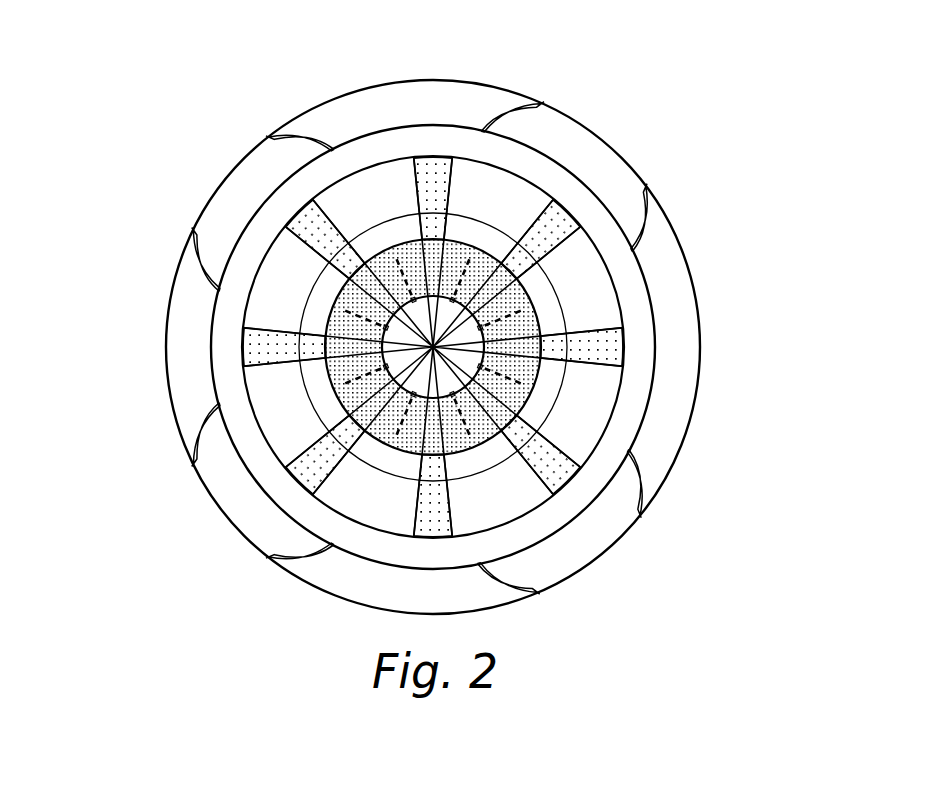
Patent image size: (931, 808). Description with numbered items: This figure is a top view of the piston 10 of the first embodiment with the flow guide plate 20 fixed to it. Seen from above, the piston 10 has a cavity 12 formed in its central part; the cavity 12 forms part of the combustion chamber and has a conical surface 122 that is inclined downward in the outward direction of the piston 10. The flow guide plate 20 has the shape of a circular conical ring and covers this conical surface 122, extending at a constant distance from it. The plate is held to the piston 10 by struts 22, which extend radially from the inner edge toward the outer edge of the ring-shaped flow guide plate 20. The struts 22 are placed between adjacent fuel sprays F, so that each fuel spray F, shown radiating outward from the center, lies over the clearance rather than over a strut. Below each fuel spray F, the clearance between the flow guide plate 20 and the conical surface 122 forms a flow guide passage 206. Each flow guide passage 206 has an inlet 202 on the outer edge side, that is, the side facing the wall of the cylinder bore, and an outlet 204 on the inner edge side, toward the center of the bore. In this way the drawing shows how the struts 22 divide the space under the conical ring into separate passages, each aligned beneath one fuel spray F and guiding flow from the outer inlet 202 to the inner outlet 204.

The piston 10 is at (214, 134).
The cavity 12 is at (503, 490).
The flow guide plate 20 is at (538, 280).
The struts 22 is at (541, 355).
The conical surface 122 is at (545, 403).
The inlet 202 is at (382, 345).
The outlet 204 is at (327, 323).
The flow guide passage 206 is at (523, 330).
The fuel spray F is at (558, 227).